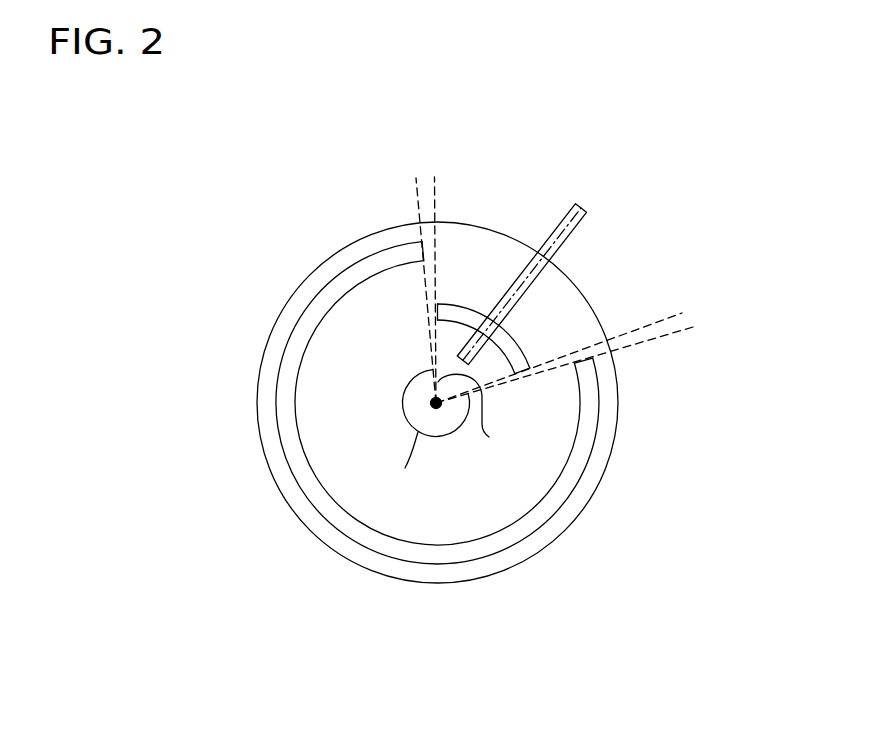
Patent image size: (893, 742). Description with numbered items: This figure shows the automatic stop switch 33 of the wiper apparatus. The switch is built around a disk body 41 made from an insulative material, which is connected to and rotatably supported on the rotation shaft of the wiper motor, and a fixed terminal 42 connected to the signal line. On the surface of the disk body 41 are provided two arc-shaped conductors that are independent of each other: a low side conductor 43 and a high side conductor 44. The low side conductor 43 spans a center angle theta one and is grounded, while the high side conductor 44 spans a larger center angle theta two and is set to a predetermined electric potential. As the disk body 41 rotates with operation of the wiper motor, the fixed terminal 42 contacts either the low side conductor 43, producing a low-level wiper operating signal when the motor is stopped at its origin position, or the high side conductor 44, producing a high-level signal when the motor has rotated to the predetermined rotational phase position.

The automatic stop switch 33 is at (733, 221).
The disk body 41 is at (365, 236).
The fixed terminal 42 is at (587, 212).
The low side conductor 43 is at (523, 347).
The high side conductor 44 is at (578, 461).